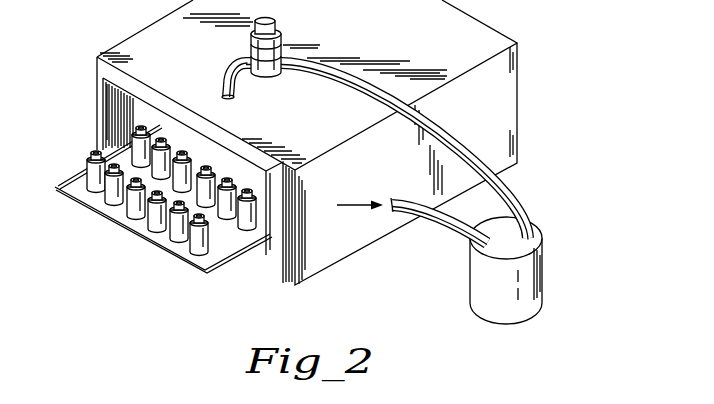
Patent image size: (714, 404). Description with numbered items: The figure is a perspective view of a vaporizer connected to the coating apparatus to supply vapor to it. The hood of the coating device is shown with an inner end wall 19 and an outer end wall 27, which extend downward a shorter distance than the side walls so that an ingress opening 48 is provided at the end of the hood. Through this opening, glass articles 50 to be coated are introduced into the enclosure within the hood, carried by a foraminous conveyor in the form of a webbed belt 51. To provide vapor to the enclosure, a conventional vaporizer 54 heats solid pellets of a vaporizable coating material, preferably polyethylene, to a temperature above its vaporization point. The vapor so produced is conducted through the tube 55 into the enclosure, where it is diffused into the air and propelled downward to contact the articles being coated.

The inner end wall 19 is at (115, 98).
The outer end wall 27 is at (100, 115).
The ingress opening 48 is at (261, 240).
The glass articles 50 is at (193, 243).
The webbed belt 51 is at (226, 238).
The vaporizer 54 is at (503, 310).
The tube 55 is at (504, 182).